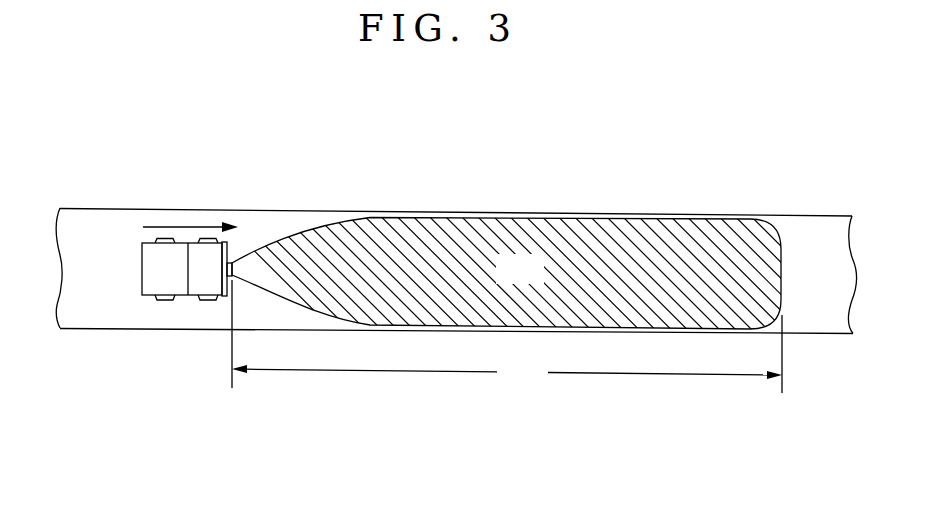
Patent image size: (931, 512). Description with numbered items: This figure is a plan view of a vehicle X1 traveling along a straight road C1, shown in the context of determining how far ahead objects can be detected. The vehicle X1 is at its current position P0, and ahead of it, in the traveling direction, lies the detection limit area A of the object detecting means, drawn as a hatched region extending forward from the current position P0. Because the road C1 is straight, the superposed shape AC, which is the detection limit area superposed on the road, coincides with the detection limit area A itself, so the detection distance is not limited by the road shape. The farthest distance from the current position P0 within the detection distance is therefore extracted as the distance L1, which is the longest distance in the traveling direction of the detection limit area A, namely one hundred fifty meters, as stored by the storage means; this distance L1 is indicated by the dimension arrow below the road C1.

The straight road C1 is at (107, 223).
The vehicle X1 is at (152, 298).
The current position P0 is at (233, 279).
The detection limit area A is at (710, 231).
The superposed shape AC is at (540, 280).
The distance L1 is at (507, 336).